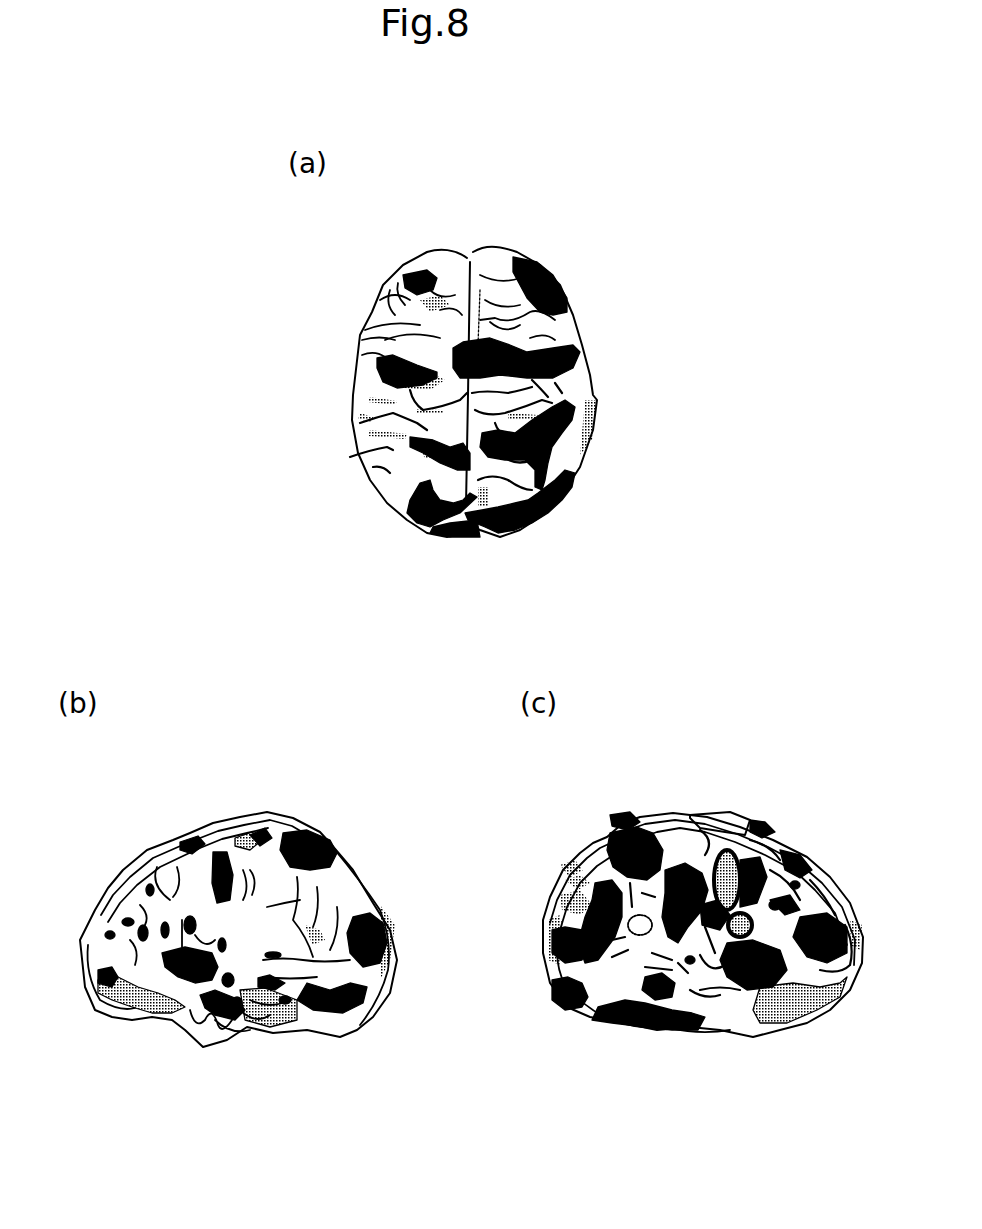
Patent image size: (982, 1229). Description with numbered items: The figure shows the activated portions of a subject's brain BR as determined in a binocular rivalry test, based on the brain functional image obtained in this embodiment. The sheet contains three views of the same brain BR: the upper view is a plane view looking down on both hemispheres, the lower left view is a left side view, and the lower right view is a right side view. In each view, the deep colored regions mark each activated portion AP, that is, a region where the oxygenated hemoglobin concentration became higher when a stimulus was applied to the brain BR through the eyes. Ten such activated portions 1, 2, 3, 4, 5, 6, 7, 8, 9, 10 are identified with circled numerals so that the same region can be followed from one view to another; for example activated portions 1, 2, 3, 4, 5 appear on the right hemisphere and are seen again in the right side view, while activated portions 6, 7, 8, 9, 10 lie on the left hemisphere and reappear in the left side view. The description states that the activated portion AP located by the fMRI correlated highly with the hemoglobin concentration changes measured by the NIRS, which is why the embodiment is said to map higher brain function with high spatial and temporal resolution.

The brain BR is at (541, 209).
The activated portion AP is at (405, 268).
The activated portion 1 is at (680, 610).
The activated portion 2 is at (650, 680).
The activated portion 3 is at (621, 631).
The activated portion 4 is at (571, 640).
The activated portion 5 is at (543, 740).
The activated portion 6 is at (388, 746).
The activated portion 7 is at (375, 659).
The activated portion 8 is at (340, 648).
The activated portion 9 is at (246, 667).
The activated portion 10 is at (266, 606).